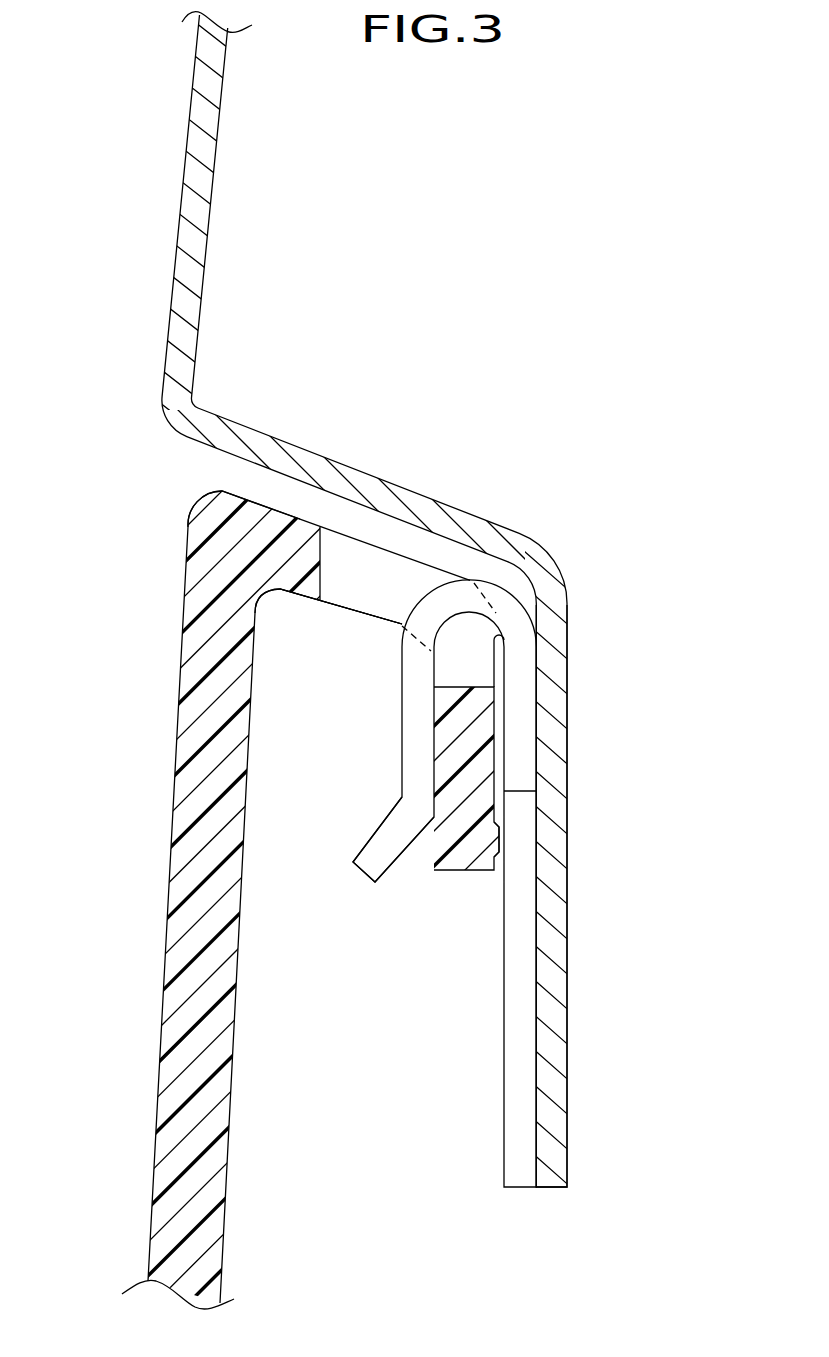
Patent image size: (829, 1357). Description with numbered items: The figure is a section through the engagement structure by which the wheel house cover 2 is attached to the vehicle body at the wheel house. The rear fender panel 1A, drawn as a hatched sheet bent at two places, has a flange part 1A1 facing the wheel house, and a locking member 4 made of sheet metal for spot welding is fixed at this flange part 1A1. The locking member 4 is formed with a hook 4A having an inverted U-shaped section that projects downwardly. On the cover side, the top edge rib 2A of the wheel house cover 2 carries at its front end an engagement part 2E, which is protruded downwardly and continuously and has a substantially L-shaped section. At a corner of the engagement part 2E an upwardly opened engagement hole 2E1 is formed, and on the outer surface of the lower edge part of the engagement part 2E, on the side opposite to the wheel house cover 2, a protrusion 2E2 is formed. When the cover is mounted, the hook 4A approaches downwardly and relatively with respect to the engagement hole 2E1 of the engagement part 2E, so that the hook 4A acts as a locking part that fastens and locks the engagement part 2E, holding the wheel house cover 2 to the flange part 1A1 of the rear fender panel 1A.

The rear fender panel 1A is at (170, 270).
The flange part 1A1 is at (563, 940).
The wheel house cover 2 is at (157, 1016).
The top edge rib 2A is at (300, 518).
The engagement part 2E is at (436, 879).
The engagement hole 2E1 is at (352, 597).
The protrusion 2E2 is at (506, 838).
The locking member 4 is at (498, 1052).
The hook 4A is at (402, 791).